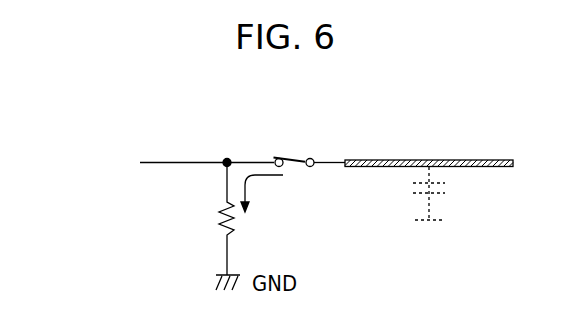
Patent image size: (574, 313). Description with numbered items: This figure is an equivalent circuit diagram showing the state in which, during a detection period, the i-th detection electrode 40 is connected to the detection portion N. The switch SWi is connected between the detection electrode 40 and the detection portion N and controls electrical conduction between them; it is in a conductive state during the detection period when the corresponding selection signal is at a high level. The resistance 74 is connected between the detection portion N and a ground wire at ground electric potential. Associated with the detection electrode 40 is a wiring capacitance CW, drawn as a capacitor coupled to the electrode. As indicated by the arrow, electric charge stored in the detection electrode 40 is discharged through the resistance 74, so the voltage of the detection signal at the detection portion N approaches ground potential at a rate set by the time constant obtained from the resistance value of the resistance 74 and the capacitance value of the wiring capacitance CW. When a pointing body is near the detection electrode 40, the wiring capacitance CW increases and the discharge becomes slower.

The resistance 74 is at (219, 229).
The detection electrode 40 is at (452, 160).
The detection portion N is at (227, 158).
The switch SWi is at (297, 160).
The wiring capacitance CW is at (448, 193).